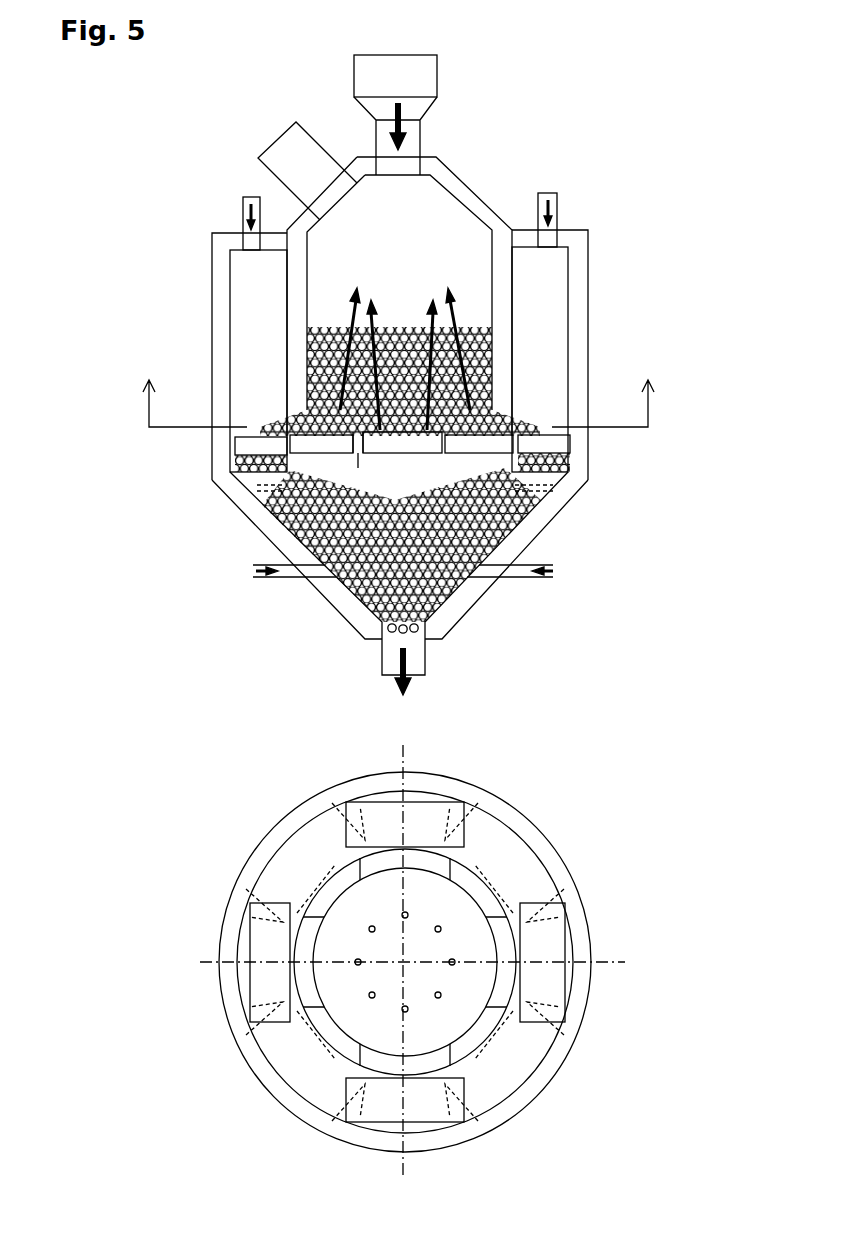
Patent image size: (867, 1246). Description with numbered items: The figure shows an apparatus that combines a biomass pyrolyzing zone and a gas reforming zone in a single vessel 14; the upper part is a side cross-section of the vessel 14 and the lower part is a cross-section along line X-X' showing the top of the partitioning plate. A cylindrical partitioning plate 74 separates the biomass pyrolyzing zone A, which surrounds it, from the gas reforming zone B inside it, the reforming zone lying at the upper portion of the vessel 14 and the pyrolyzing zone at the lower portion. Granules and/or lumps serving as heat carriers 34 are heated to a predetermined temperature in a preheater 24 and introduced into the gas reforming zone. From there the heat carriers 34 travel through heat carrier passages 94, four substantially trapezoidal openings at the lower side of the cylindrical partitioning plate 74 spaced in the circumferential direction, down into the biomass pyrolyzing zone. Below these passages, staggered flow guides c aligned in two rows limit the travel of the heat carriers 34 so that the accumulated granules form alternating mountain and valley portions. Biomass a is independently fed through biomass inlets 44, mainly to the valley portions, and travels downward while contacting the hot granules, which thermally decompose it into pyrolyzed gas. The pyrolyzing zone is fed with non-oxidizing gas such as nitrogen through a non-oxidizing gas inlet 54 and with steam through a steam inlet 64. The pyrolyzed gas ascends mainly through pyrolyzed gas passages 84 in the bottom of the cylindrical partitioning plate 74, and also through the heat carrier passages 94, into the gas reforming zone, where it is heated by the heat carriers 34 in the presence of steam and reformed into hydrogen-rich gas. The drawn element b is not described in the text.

The vessel 14 is at (474, 182).
The preheater 24 is at (420, 54).
The heat carriers 34 is at (387, 305).
The biomass inlets 44 is at (245, 196).
The non-oxidizing gas inlet 54 is at (553, 578).
The steam inlet 64 is at (250, 580).
The cylindrical partitioning plate 74 is at (291, 331).
The pyrolyzed gas passages 84 is at (449, 438).
The heat carrier passages 94 is at (250, 440).
The biomass a is at (245, 213).
The side inlet pipe b is at (268, 143).
The flow guides c is at (255, 444).